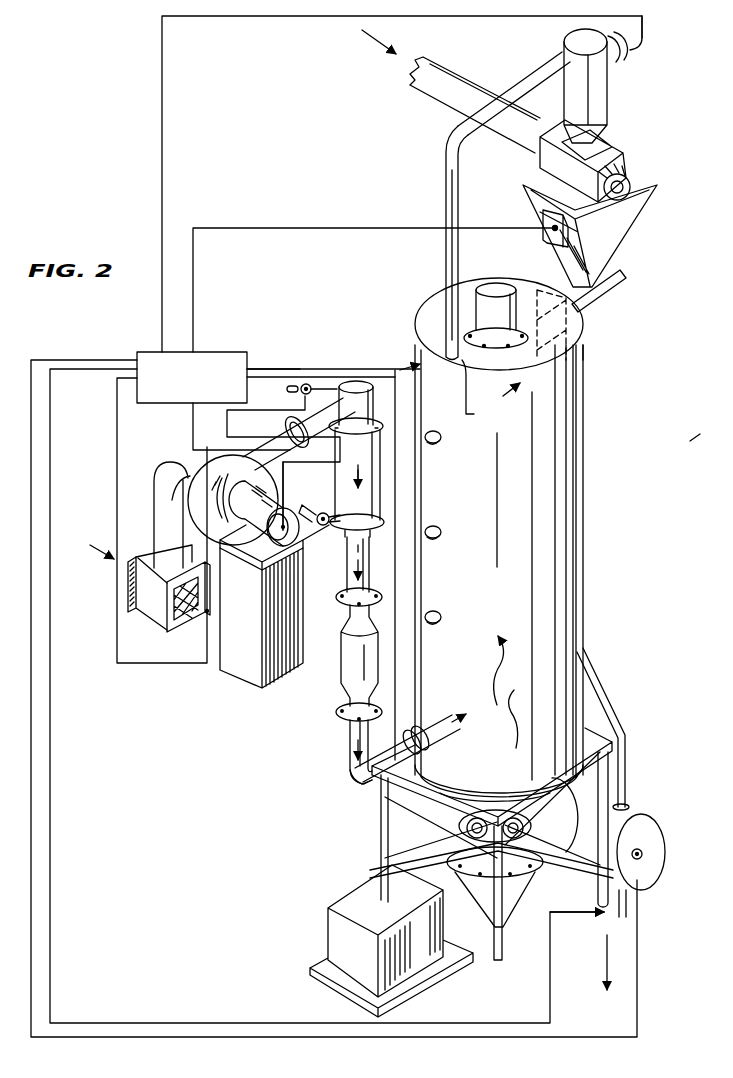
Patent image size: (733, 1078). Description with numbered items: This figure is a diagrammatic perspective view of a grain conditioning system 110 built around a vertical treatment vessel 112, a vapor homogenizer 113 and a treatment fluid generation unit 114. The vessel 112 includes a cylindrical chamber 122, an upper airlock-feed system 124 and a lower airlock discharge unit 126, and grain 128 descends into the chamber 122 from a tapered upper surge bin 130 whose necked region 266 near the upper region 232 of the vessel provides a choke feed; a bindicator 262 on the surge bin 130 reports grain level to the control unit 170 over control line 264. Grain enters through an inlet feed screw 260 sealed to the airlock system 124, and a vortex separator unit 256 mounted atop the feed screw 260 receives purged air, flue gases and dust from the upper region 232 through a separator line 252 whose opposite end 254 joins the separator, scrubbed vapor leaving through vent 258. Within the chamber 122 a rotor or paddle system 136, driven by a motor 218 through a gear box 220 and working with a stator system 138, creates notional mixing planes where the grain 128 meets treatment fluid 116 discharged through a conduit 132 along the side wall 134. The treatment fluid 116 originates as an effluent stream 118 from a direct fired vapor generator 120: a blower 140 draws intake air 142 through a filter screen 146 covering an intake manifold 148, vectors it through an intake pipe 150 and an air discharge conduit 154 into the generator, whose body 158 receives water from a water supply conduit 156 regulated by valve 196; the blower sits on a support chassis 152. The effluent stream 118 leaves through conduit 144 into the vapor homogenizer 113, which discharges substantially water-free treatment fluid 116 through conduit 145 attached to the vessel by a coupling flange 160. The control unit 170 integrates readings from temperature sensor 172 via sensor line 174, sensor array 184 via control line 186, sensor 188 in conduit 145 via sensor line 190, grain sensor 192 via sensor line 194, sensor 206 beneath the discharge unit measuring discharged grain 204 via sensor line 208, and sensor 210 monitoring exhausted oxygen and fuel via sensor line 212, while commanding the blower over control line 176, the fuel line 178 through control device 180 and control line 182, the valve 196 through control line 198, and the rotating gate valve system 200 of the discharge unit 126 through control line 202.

The grain conditioning system 110 is at (658, 466).
The vertical treatment vessel 112 is at (546, 545).
The vapor homogenizer 113 is at (354, 672).
The treatment fluid generation unit 114 is at (206, 484).
The treatment fluid 116 is at (500, 742).
The effluent stream 118 is at (358, 572).
The direct fired vapor generator 120 is at (384, 447).
The cylindrical chamber 122 is at (576, 486).
The upper airlock-feed system 124 is at (634, 160).
The lower airlock discharge unit 126 is at (654, 808).
The grain 128 is at (512, 386).
The upper surge bin 130 is at (626, 240).
The conduit 132 is at (440, 722).
The side wall 134 is at (588, 362).
The rotor or paddle system 136 is at (496, 284).
The stator system 138 is at (443, 546).
The blower 140 is at (186, 507).
The intake air 142 is at (209, 613).
The conduit 144 is at (400, 576).
The conduit 145 is at (352, 780).
The filter screen 146 is at (184, 626).
The intake manifold 148 is at (165, 616).
The intake pipe 150 is at (172, 476).
The support chassis 152 is at (266, 688).
The air discharge conduit 154 is at (290, 432).
The water supply conduit 156 is at (369, 553).
The body 158 is at (383, 487).
The coupling flange 160 is at (432, 760).
The control unit 170 is at (213, 352).
The temperature sensor 172 is at (182, 566).
The sensor line 174 is at (117, 400).
The control line 176 is at (193, 436).
The fuel line 178 is at (292, 386).
The control device 180 is at (308, 384).
The control line 182 is at (255, 413).
The sensor array 184 is at (358, 386).
The control line 186 is at (290, 377).
The sensor 188 is at (368, 780).
The sensor line 190 is at (352, 380).
The sensor 192 is at (416, 350).
The sensor line 194 is at (258, 369).
The valve 196 is at (323, 526).
The control line 198 is at (322, 494).
The rotating gate valve system 200 is at (660, 840).
The control line 202 is at (650, 926).
The discharged grain 204 is at (605, 968).
The sensor 206 is at (608, 924).
The sensor line 208 is at (262, 1023).
The sensor 210 is at (640, 32).
The sensor line 212 is at (272, 20).
The motor 218 is at (422, 972).
The gear box 220 is at (526, 862).
The upper region 232 is at (491, 392).
The separator line 252 is at (446, 190).
The opposite end 254 is at (536, 78).
The vortex separator unit 256 is at (610, 95).
The vent 258 is at (628, 52).
The inlet feed screw 260 is at (455, 86).
The bindicator 262 is at (548, 226).
The control line 264 is at (290, 228).
The necked region 266 is at (602, 306).